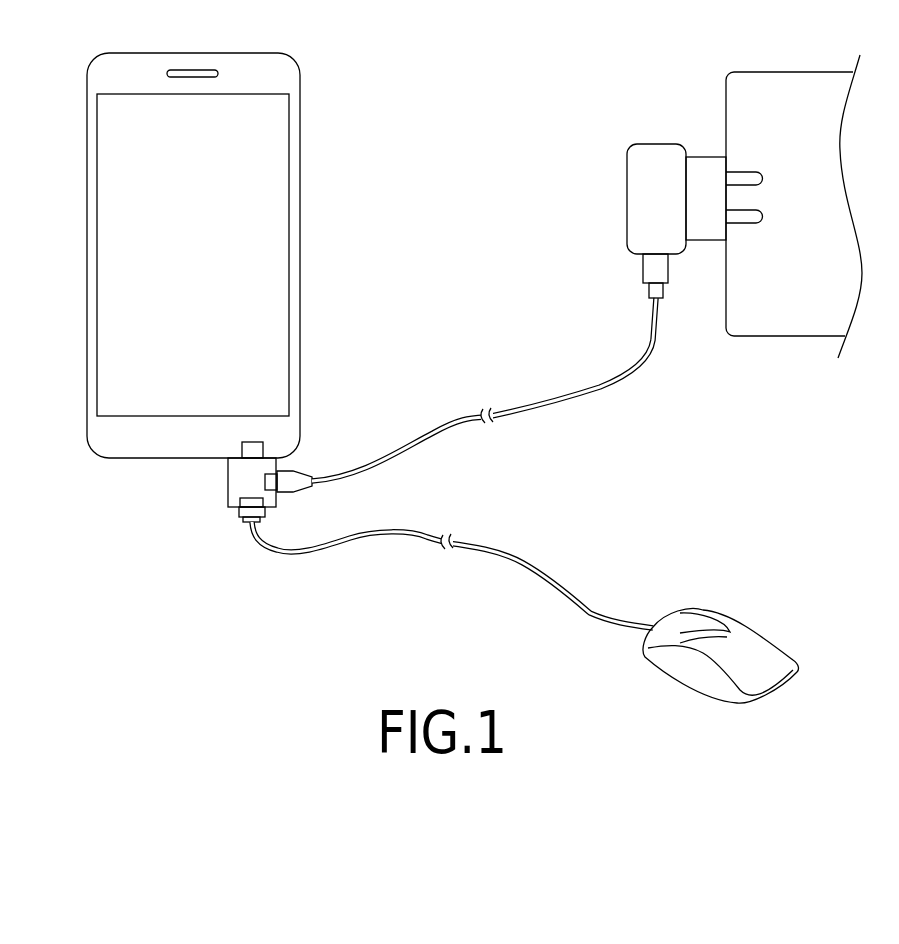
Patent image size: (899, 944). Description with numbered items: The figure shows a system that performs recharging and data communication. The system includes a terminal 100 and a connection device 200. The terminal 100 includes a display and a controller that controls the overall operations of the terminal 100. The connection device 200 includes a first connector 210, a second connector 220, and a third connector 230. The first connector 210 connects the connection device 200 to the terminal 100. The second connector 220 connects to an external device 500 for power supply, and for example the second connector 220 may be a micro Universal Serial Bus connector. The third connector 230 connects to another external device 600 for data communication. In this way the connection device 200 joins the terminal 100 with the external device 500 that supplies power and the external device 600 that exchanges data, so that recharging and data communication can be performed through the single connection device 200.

The terminal 100 is at (300, 253).
The connection device 200 is at (217, 488).
The first connector 210 is at (250, 444).
The second connector 220 is at (240, 500).
The third connector 230 is at (297, 495).
The external device 500 is at (655, 143).
The external device 600 is at (723, 610).